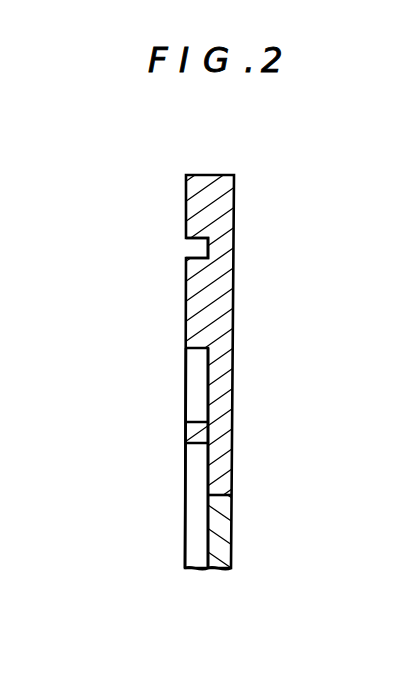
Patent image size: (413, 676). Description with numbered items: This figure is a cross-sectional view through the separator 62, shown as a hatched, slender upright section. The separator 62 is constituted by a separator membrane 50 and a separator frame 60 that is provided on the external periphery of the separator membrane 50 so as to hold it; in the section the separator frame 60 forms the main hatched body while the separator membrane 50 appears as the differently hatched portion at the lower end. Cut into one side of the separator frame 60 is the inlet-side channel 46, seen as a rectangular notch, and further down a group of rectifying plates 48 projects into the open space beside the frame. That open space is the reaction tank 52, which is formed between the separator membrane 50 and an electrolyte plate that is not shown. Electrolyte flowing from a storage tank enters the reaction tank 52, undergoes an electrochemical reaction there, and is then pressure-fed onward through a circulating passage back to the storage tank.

The separator 62 is at (249, 347).
The separator frame 60 is at (234, 213).
The inlet-side channel 46 is at (186, 246).
The rectifying plates 48 is at (186, 432).
The separator membrane 50 is at (231, 521).
The reaction tank 52 is at (201, 518).